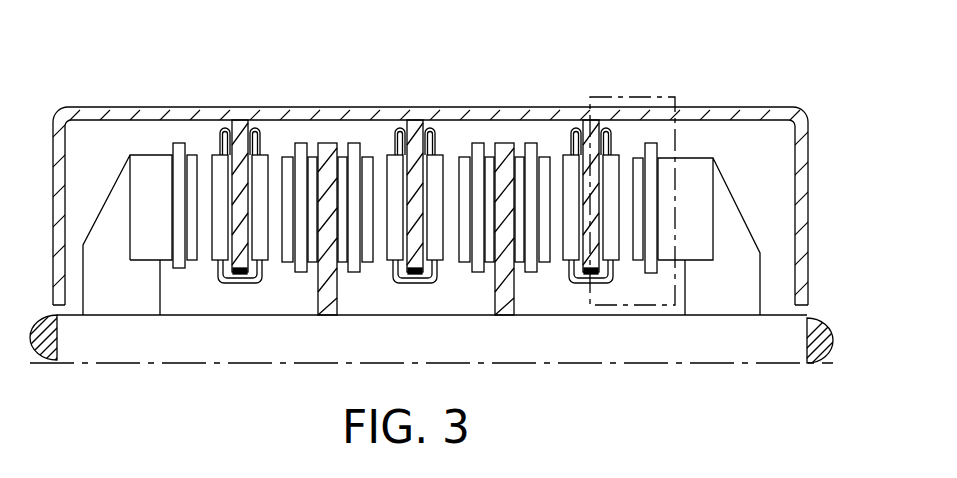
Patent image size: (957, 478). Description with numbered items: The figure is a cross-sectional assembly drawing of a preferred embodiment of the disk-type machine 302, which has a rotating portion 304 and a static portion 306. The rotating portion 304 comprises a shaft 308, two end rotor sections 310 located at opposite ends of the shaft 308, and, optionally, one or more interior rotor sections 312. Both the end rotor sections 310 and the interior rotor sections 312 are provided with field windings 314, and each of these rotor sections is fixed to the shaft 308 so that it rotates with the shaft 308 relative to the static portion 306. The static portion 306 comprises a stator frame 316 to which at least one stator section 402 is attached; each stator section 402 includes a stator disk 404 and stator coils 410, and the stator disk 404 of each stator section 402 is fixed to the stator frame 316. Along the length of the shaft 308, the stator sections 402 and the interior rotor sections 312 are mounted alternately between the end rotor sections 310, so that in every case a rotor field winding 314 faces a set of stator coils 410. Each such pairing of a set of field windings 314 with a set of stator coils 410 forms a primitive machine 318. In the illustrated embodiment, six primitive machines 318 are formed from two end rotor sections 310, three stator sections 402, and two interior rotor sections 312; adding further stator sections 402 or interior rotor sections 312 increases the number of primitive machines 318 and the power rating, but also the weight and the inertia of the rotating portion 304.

The disk-type machine 302 is at (720, 107).
The rotating portion 304 is at (338, 370).
The static portion 306 is at (333, 110).
The shaft 308 is at (757, 339).
The end rotor sections 310 is at (117, 298).
The interior rotor sections 312 is at (503, 299).
The field windings 314 is at (300, 265).
The stator frame 316 is at (809, 140).
The primitive machine 318 is at (668, 97).
The stator section 402 is at (263, 133).
The stator disk 404 is at (239, 131).
The stator coils 410 is at (215, 133).